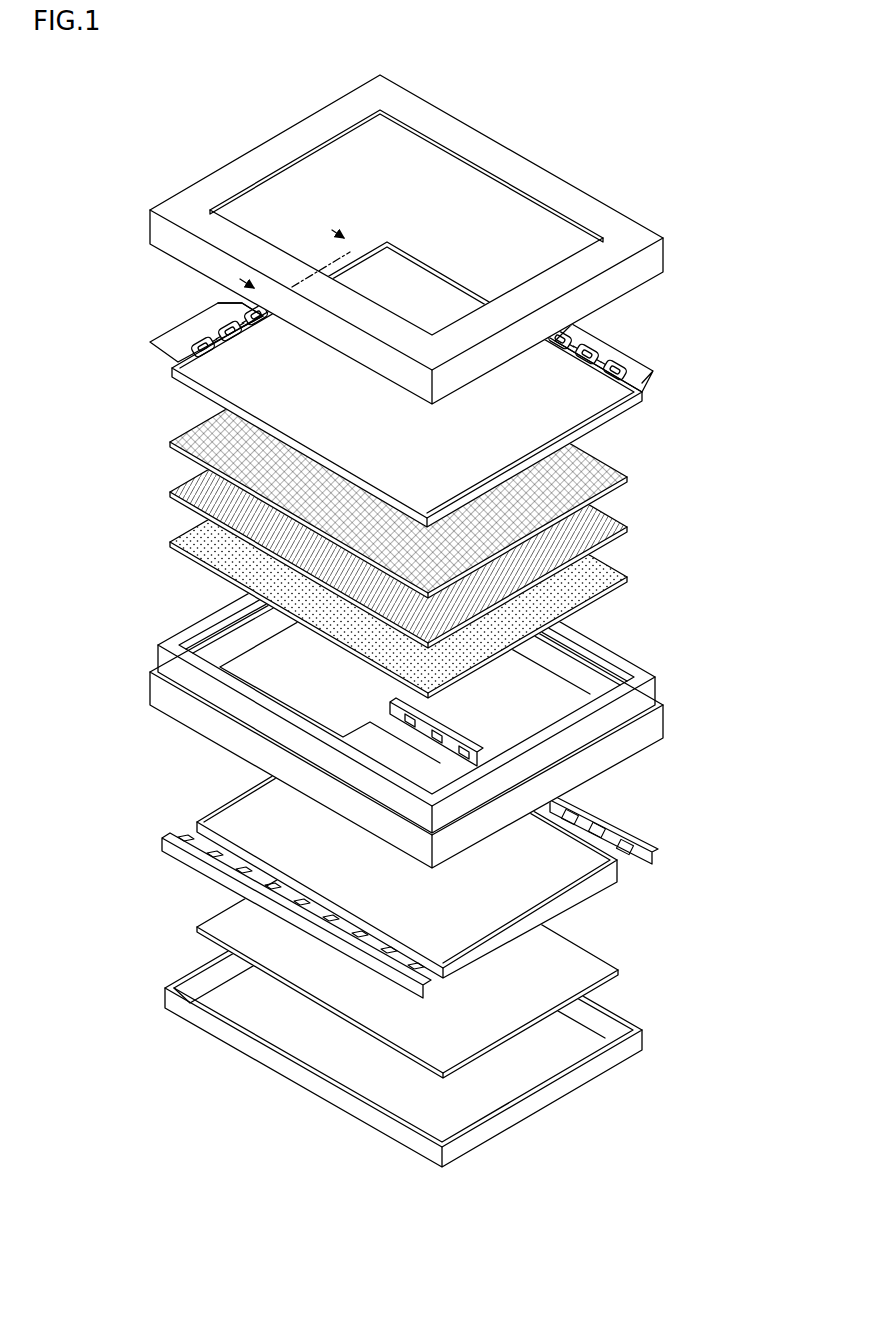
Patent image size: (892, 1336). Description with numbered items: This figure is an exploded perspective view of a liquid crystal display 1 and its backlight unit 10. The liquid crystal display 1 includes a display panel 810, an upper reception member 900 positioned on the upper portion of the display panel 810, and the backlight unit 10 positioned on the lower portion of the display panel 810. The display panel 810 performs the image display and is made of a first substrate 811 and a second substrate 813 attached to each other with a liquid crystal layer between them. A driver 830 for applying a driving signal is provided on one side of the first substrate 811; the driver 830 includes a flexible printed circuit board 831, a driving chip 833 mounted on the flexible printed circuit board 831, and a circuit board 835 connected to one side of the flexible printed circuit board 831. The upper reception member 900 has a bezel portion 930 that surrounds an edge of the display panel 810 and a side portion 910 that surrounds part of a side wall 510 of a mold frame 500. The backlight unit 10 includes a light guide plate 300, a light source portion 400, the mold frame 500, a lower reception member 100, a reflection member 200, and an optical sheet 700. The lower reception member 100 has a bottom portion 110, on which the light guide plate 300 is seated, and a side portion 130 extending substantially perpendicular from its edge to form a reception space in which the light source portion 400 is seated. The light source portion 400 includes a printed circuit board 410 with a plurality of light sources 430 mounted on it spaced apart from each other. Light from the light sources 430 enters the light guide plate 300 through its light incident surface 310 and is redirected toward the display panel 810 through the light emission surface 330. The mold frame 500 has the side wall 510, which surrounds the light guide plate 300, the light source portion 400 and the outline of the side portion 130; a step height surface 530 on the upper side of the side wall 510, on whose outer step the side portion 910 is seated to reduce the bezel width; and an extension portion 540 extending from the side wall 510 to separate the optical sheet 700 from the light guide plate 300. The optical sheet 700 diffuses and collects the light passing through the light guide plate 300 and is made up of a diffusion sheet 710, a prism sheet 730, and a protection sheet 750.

The liquid crystal display 1 is at (526, 61).
The backlight unit 10 is at (778, 747).
The lower reception member 100 is at (446, 1019).
The bottom portion 110 is at (426, 984).
The side portion 130 is at (418, 1019).
The reflection member 200 is at (465, 951).
The light guide plate 300 is at (465, 847).
The light incident surface 310 is at (441, 847).
The light emission surface 330 is at (445, 841).
The light source portion 400 is at (463, 897).
The printed circuit board 410 is at (439, 897).
The light sources 430 is at (447, 886).
The mold frame 500 is at (455, 693).
The side wall 510 is at (433, 705).
The step height surface 530 is at (437, 675).
The extension portion 540 is at (451, 610).
The optical sheet 700 is at (463, 512).
The diffusion sheet 710 is at (437, 562).
The prism sheet 730 is at (437, 512).
The protection sheet 750 is at (437, 462).
The display panel 810 is at (466, 384).
The first substrate 811 is at (437, 384).
The second substrate 813 is at (625, 358).
The driver 830 is at (157, 318).
The flexible printed circuit board 831 is at (177, 333).
The driving chip 833 is at (183, 328).
The circuit board 835 is at (194, 301).
The upper reception member 900 is at (451, 239).
The side portion 910 is at (442, 239).
The bezel portion 930 is at (441, 222).